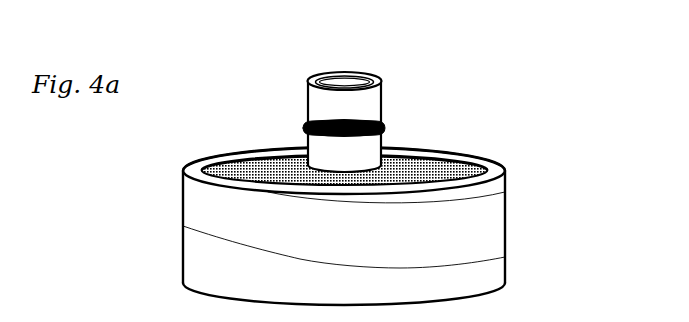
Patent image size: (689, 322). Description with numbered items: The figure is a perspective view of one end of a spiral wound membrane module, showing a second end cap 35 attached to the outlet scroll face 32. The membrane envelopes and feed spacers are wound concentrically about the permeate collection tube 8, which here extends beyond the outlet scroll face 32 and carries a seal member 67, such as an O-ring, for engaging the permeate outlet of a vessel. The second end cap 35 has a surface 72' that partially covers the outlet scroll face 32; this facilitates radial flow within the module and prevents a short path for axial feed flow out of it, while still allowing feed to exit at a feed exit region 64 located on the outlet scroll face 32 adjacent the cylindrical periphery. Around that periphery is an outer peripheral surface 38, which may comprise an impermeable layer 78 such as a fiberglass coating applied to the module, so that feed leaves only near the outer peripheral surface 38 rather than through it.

The permeate collection tube 8 is at (362, 72).
The outlet scroll face 32 is at (437, 152).
The second end cap 35 is at (470, 162).
The outer peripheral surface 38 is at (505, 225).
The feed exit region 64 is at (268, 150).
The seal member 67 is at (305, 122).
The surface 72' is at (329, 116).
The impermeable layer 78 is at (505, 268).